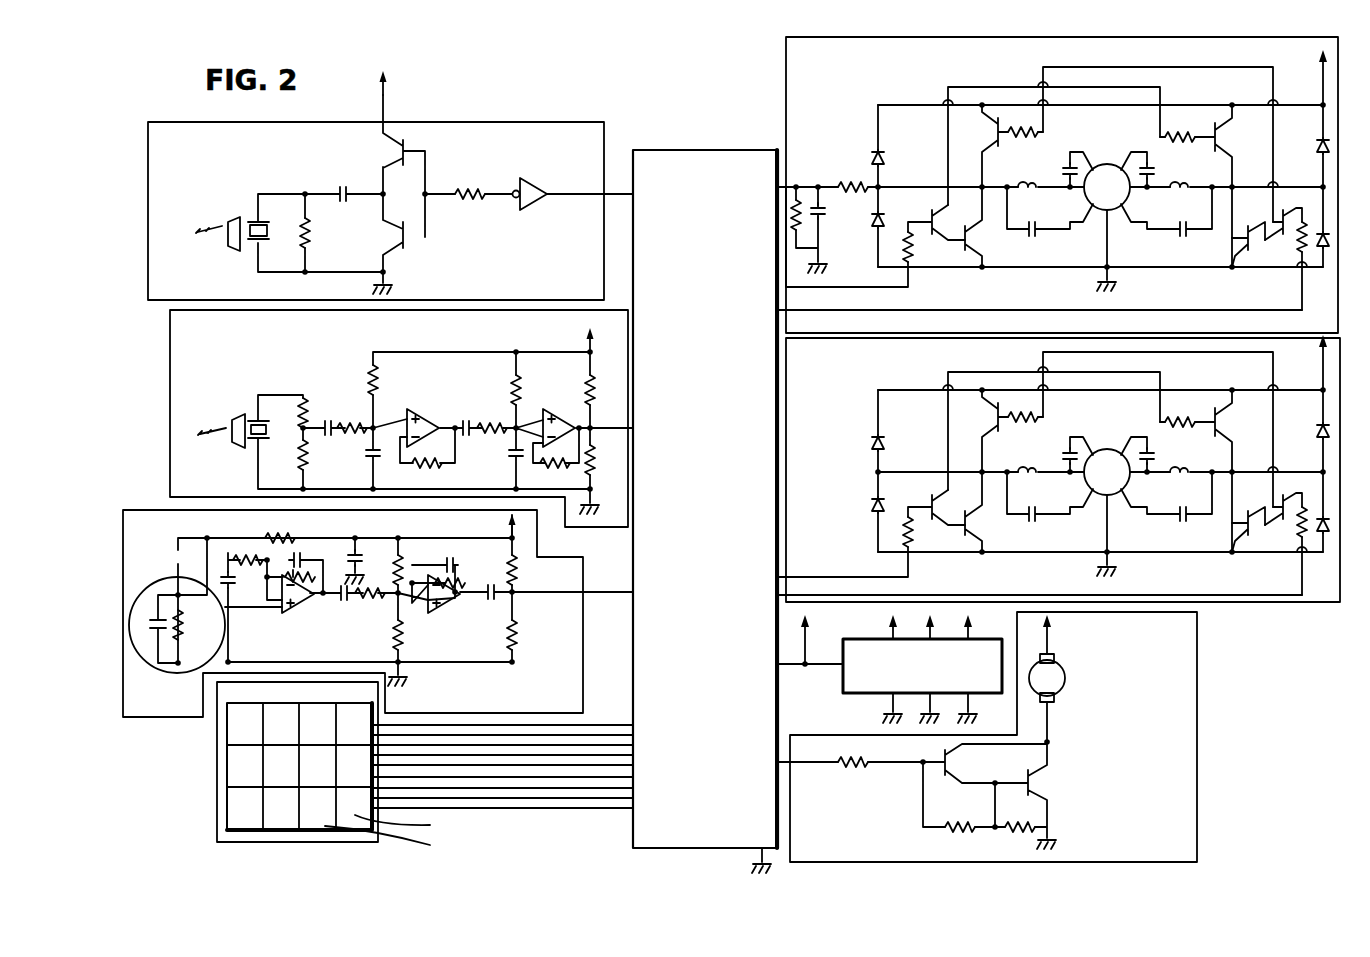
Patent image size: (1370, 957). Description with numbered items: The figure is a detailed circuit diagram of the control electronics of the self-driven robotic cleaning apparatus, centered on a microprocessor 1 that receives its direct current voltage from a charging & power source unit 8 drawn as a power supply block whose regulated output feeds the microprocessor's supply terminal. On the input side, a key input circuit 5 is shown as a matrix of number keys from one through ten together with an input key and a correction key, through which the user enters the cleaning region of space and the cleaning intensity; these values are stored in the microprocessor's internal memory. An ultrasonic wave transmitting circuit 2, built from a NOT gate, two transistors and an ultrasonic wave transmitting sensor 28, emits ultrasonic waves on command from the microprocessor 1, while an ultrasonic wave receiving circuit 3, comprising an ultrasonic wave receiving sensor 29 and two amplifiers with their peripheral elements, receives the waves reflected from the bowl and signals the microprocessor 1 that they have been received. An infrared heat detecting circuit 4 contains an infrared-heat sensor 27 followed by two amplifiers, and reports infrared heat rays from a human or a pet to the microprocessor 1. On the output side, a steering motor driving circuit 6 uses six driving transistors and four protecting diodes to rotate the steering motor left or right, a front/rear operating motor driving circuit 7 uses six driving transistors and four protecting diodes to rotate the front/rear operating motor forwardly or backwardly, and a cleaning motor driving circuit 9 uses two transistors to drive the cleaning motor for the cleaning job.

The microprocessor 1 is at (700, 150).
The ultrasonic wave transmitting circuit 2 is at (390, 185).
The ultrasonic wave receiving circuit 3 is at (380, 419).
The infrared heat detecting circuit 4 is at (378, 582).
The key input circuit 5 is at (215, 808).
The steering motor driving circuit 6 is at (786, 60).
The front/rear operating motor driving circuit 7 is at (1318, 602).
The charging & power source unit 8 is at (843, 688).
The cleaning motor driving circuit 9 is at (1197, 680).
The infrared-heat sensor 27 is at (152, 668).
The ultrasonic wave transmitting sensor 28 is at (230, 252).
The ultrasonic wave receiving sensor 29 is at (240, 410).